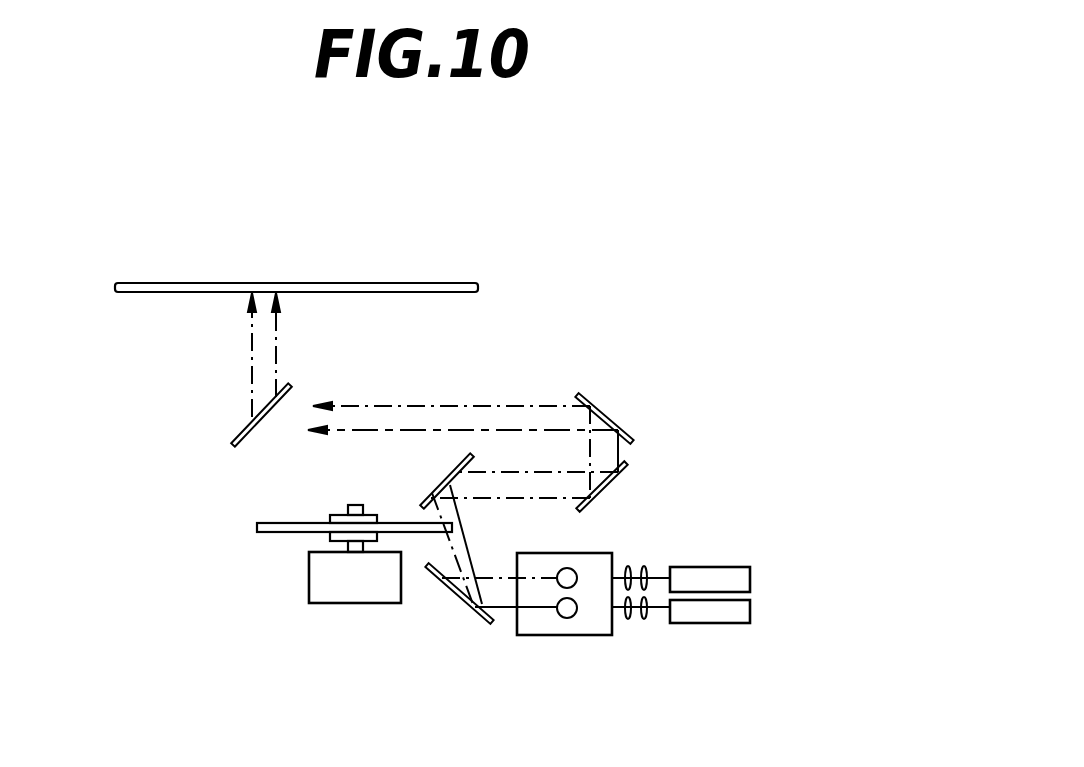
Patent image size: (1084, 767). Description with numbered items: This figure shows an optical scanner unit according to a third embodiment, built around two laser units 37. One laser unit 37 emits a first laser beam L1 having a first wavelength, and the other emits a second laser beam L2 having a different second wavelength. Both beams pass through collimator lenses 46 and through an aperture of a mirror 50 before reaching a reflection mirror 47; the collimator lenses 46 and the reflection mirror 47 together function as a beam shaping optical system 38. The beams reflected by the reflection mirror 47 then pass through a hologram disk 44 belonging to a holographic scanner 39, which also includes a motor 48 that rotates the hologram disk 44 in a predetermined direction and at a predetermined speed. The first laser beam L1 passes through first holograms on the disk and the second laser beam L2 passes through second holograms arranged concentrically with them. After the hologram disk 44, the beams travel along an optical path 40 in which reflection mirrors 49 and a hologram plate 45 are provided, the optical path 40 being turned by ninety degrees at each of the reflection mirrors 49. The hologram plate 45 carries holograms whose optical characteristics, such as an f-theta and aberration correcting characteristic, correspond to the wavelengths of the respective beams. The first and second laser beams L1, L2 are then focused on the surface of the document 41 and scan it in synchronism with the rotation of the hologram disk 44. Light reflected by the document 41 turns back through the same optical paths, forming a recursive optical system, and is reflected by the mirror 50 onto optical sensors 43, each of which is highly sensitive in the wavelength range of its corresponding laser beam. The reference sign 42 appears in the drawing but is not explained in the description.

The laser units 37 is at (749, 619).
The beam shaping optical system 38 is at (625, 632).
The holographic scanner 39 is at (301, 575).
The optical path 40 is at (496, 385).
The document 41 is at (418, 284).
The beam combining unit 42 is at (423, 643).
The optical sensors 43 is at (578, 606).
The hologram disk 44 is at (262, 522).
The hologram plate 45 is at (245, 432).
The collimator lenses 46 is at (638, 632).
The reflection mirror 47 is at (438, 575).
The motor 48 is at (332, 605).
The reflection mirrors 49 is at (614, 474).
The mirror 50 is at (593, 596).
The first laser beam L1 is at (658, 572).
The second laser beam L2 is at (660, 617).